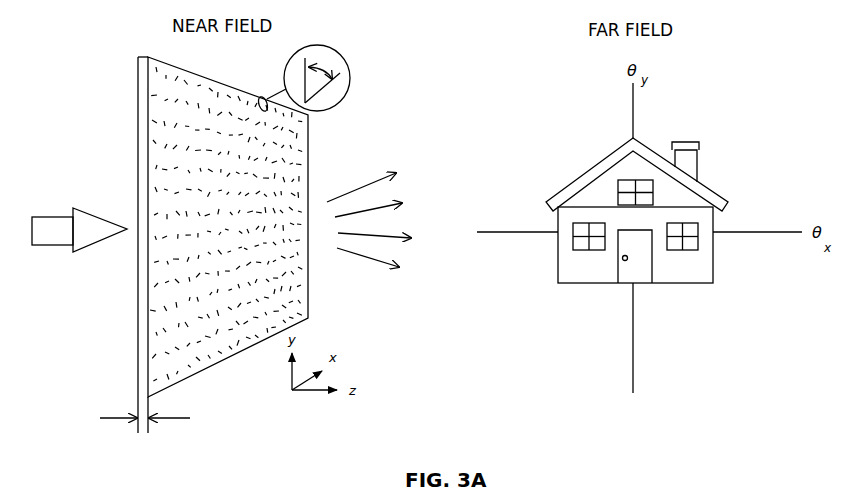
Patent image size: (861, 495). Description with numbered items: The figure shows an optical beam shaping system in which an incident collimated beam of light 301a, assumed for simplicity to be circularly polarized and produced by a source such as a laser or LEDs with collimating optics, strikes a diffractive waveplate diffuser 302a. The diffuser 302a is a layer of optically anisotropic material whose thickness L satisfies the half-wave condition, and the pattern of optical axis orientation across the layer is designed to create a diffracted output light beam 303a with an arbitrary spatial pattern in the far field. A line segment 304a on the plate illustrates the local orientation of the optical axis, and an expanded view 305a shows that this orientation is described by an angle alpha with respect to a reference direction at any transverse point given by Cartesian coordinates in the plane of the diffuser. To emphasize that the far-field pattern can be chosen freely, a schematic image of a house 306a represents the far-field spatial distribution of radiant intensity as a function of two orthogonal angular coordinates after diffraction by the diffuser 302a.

The incident collimated beam of light 301a is at (56, 279).
The diffractive waveplate diffuser 302a is at (233, 350).
The light beam after passing through the diffractive waveplate diffuser 303a is at (366, 289).
The line segment illustrating local orientation of the optical axis 304a is at (260, 97).
The expanded view of optical axis orientation 305a is at (341, 106).
The illustration of far-field spatial distribution of radiant intensity 306a is at (557, 169).